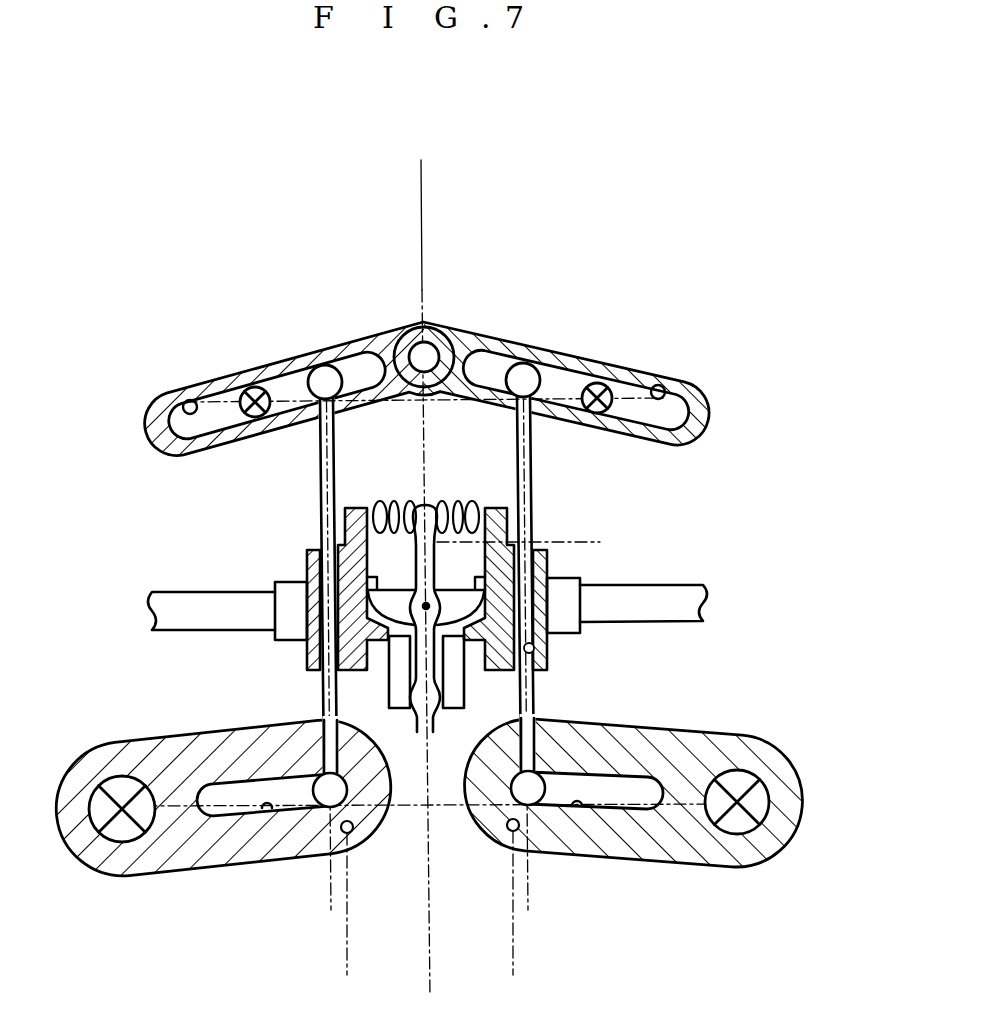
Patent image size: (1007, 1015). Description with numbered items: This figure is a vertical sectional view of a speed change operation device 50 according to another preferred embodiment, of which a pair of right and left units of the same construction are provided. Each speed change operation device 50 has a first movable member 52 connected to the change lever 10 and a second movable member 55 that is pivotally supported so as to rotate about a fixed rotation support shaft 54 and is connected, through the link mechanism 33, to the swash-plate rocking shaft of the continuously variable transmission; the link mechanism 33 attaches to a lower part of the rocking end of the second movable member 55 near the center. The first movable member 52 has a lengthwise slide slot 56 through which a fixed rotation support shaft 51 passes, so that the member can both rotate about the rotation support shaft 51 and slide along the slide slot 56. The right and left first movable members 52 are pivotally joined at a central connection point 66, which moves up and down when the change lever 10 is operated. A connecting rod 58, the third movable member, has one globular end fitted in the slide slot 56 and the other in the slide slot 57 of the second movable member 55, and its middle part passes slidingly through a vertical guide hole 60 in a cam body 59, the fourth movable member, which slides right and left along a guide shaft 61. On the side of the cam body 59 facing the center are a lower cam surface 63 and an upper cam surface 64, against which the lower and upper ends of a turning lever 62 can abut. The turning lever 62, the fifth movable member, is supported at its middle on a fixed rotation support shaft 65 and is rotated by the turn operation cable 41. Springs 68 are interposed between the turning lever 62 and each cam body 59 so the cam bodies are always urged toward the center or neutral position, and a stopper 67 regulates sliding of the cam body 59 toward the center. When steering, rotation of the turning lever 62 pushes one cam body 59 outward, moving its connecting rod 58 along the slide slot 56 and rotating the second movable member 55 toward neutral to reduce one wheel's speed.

The change lever 10 is at (425, 190).
The speed change operation device 50 is at (195, 278).
The first movable member 52 is at (303, 350).
The connection point 66 is at (436, 331).
The rotation support shaft 51 is at (252, 390).
The slide slot 56 is at (190, 400).
The connecting rod 58 is at (320, 482).
The cam body 59 is at (307, 562).
The vertical guide hole 60 is at (307, 665).
The guide shaft 61 is at (183, 600).
The turning lever 62 is at (419, 567).
The stopper 67 is at (476, 592).
The turn operation cable 41 is at (574, 543).
The upper cam surface 64 is at (384, 502).
The spring 68 is at (414, 500).
The rotation support shaft 65 is at (458, 648).
The second movable member 55 is at (218, 858).
The rotation support shaft 54 is at (122, 843).
The slide slot 57 is at (272, 812).
The lower cam surface 63 is at (365, 789).
The link mechanism 33 is at (347, 935).